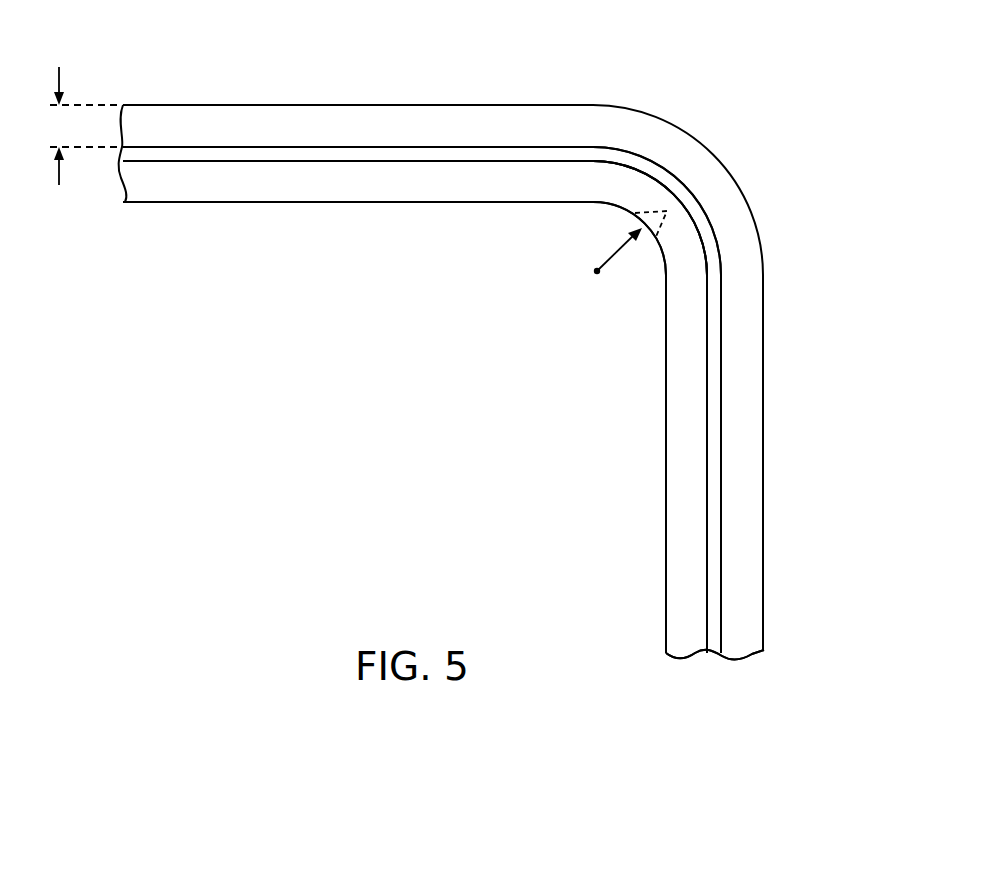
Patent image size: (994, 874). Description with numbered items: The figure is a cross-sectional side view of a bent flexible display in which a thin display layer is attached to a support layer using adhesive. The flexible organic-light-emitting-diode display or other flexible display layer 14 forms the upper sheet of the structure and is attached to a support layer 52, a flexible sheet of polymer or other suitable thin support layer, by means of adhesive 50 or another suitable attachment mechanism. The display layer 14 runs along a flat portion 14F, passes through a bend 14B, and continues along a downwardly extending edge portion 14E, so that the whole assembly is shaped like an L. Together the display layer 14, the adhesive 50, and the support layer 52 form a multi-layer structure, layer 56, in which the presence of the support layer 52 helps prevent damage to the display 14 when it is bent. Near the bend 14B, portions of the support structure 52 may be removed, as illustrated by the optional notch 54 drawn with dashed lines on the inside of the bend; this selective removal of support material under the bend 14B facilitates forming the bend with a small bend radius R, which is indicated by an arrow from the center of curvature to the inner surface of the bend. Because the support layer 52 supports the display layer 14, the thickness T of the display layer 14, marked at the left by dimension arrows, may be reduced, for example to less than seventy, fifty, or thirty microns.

The flexible display layer 14 is at (592, 124).
The flat portion of panel 14F is at (590, 76).
The bend 14B is at (720, 156).
The edge portion of panel 14E is at (807, 187).
The support layer 52 is at (413, 185).
The adhesive 50 is at (715, 620).
The notch 54 is at (643, 213).
The multi-layer structure layer 56 is at (744, 678).
The bend radius R is at (615, 267).
The thickness T is at (84, 126).